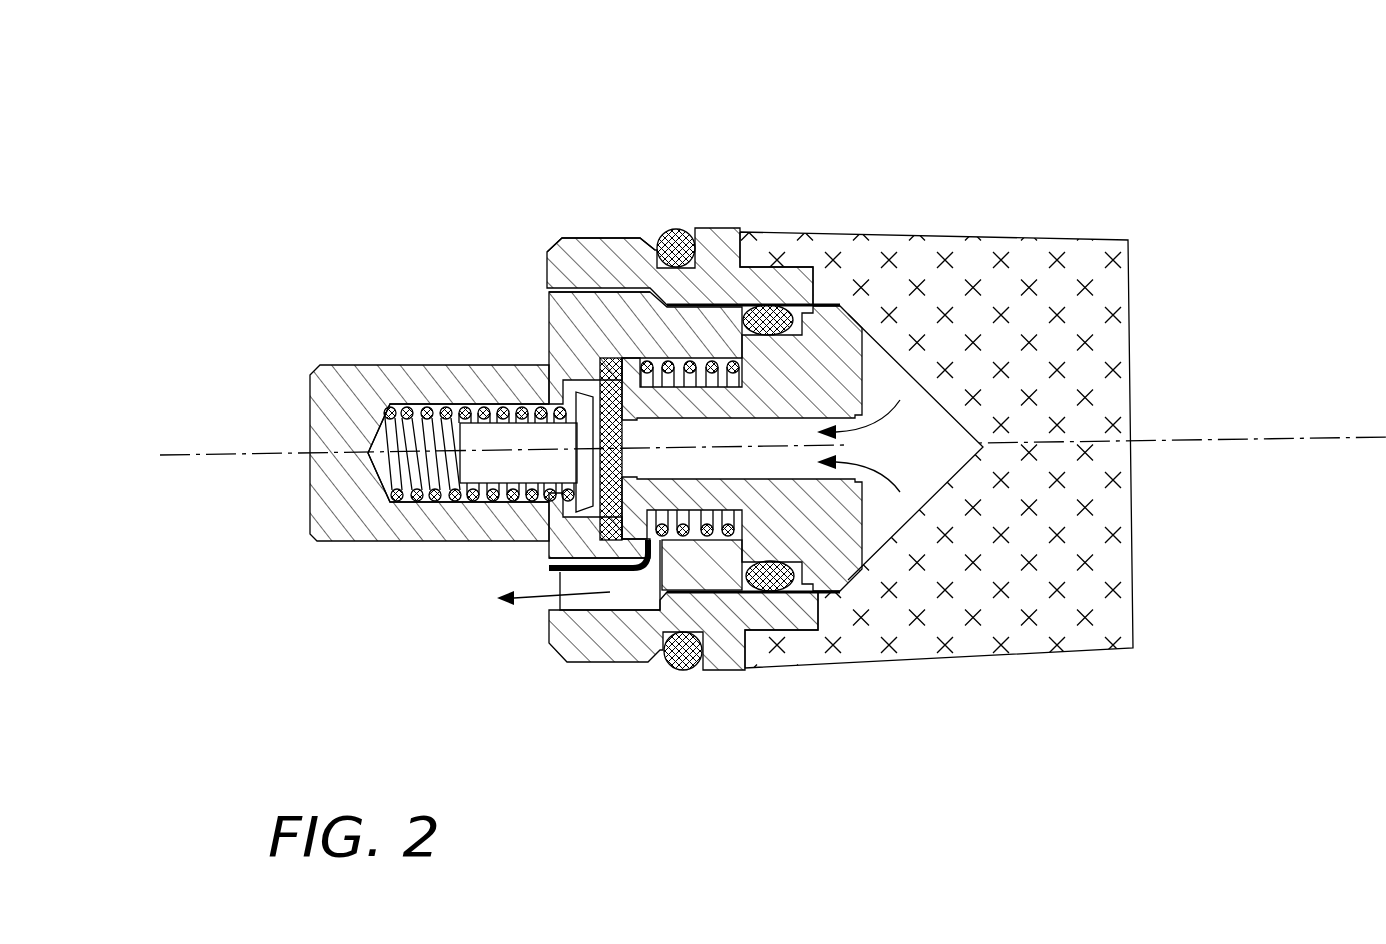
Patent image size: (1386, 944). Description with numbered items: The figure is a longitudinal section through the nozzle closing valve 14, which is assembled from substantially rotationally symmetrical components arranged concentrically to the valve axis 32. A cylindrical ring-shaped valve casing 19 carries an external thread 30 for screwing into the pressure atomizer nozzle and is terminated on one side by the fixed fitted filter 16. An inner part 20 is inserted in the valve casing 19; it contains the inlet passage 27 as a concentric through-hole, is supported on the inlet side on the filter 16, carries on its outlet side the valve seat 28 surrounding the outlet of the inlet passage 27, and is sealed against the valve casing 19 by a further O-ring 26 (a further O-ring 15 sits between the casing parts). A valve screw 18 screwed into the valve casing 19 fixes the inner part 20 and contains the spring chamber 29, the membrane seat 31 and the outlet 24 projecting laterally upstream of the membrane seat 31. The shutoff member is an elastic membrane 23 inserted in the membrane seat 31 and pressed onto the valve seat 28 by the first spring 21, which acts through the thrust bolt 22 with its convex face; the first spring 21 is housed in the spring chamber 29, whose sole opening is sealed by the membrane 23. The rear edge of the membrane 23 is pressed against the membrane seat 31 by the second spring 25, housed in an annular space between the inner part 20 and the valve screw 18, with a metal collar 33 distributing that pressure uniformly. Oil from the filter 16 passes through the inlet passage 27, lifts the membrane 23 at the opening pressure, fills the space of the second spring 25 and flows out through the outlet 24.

The nozzle closing valve 14 is at (441, 152).
The O-ring 15 is at (688, 226).
The filter 16 is at (1057, 260).
The valve screw 18 is at (340, 375).
The valve casing 19 is at (632, 630).
The inner part 20 is at (850, 507).
The first spring 21 is at (353, 543).
The thrust bolt 22 is at (485, 467).
The membrane 23 is at (557, 248).
The outlet 24 is at (595, 590).
The second spring 25 is at (727, 593).
The O-ring 26 is at (771, 306).
The inlet passage 27 is at (800, 467).
The valve seat 28 is at (549, 358).
The spring chamber 29 is at (438, 408).
The external thread 30 is at (618, 296).
The membrane seat 31 is at (550, 547).
The valve axis 32 is at (1234, 452).
The metal collar 33 is at (630, 358).